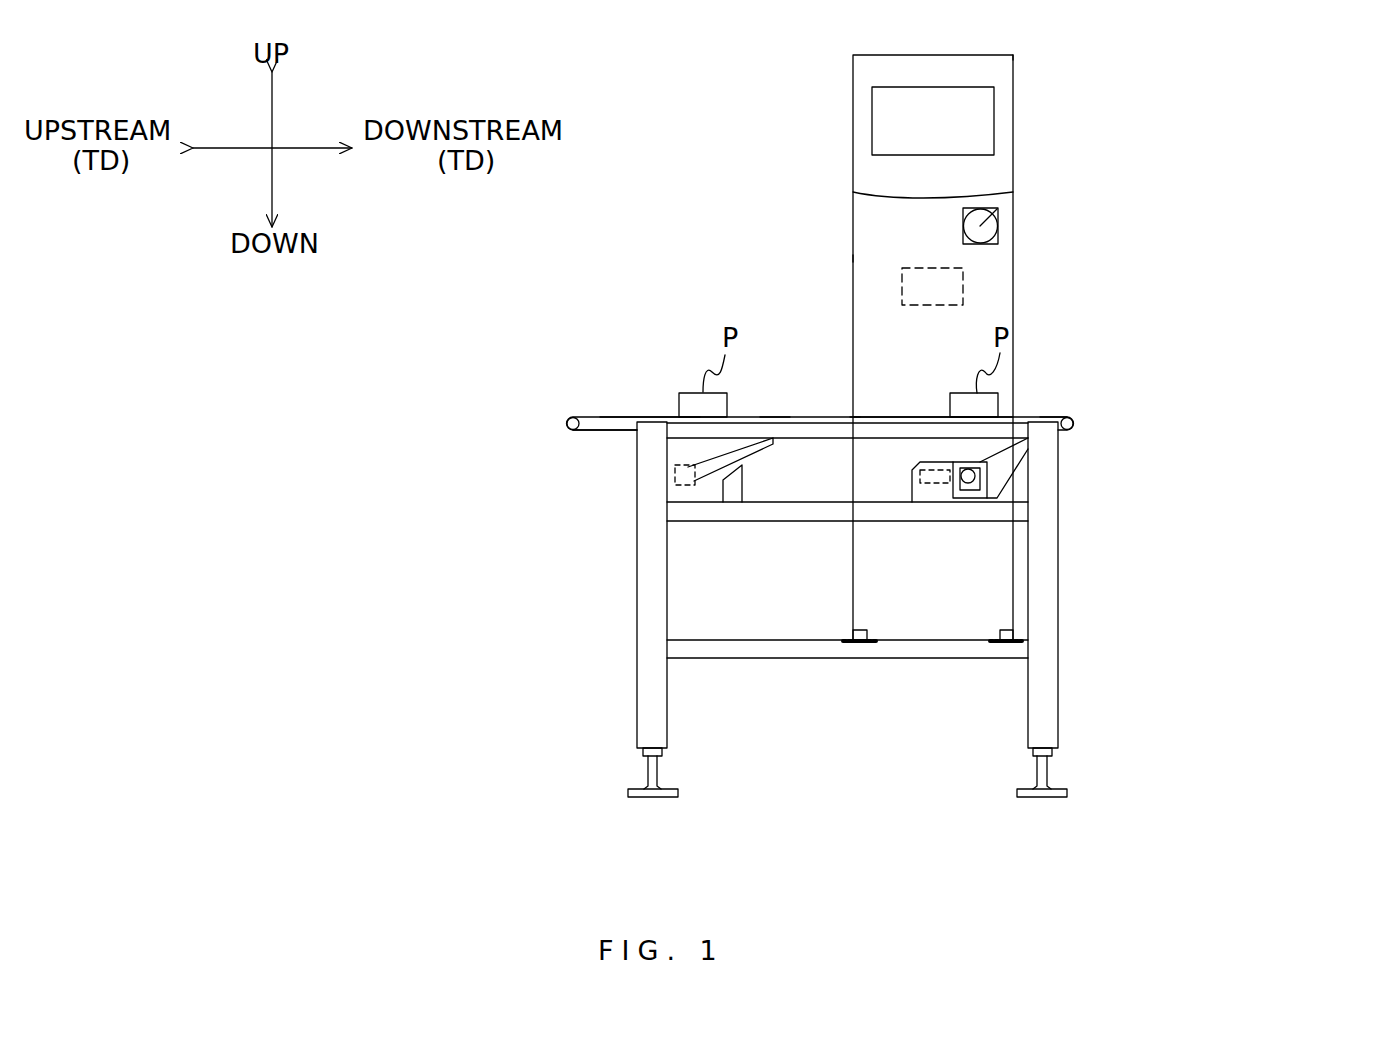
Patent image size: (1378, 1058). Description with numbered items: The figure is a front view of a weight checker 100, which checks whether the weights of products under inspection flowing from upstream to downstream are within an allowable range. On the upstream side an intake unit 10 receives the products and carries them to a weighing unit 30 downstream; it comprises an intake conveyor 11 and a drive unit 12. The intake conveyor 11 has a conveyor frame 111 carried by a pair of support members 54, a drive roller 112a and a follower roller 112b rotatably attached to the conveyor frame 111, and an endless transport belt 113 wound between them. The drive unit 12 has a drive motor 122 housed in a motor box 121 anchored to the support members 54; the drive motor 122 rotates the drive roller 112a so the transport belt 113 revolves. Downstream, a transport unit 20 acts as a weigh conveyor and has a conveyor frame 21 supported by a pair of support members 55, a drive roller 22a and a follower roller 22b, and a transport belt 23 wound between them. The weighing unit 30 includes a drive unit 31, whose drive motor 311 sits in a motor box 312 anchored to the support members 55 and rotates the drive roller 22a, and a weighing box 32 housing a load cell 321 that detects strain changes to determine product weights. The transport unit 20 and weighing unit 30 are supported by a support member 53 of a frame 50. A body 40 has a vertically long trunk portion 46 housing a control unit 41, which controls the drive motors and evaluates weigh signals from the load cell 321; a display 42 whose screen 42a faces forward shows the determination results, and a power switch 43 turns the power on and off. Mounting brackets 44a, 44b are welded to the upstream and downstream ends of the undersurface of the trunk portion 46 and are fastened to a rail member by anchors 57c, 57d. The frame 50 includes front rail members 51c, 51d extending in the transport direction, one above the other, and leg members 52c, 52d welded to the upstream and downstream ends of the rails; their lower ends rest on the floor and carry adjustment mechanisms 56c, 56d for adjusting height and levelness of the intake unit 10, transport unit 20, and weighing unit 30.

The weight checker 100 is at (1187, 282).
The intake unit 10 is at (651, 356).
The intake conveyor 11 is at (744, 410).
The drive unit 12 is at (683, 506).
The transport unit 20 is at (1025, 397).
The conveyor frame 21 is at (873, 418).
The drive roller 22a is at (1060, 428).
The follower roller 22b is at (853, 395).
The transport belt 23 is at (1058, 415).
The weighing unit 30 is at (1021, 461).
The drive unit 31 is at (1013, 533).
The weighing box 32 is at (1022, 490).
The body 40 is at (823, 183).
The control unit 41 is at (963, 285).
The display 42 is at (1036, 99).
The screen 42a is at (994, 138).
The power switch 43 is at (1007, 205).
The mounting bracket 44a is at (860, 640).
The mounting bracket 44b is at (1008, 640).
The trunk portion 46 is at (853, 258).
The frame 50 is at (890, 615).
The rail member 51c is at (1013, 432).
The rail member 51d is at (1018, 652).
The leg member 52c is at (652, 677).
The leg member 52d is at (1043, 690).
The support member 53 is at (793, 513).
The support member 54 is at (680, 447).
The support member 55 is at (958, 450).
The adjustment mechanism 56c is at (652, 768).
The adjustment mechanism 56d is at (1042, 773).
The anchor 57c is at (860, 642).
The anchor 57d is at (1008, 642).
The conveyor frame 111 is at (592, 423).
The drive roller 112a is at (773, 420).
The follower roller 112b is at (567, 418).
The transport belt 113 is at (650, 417).
The motor box 121 is at (733, 487).
The drive motor 122 is at (683, 477).
The drive motor 311 is at (987, 498).
The motor box 312 is at (947, 498).
The load cell 321 is at (905, 490).